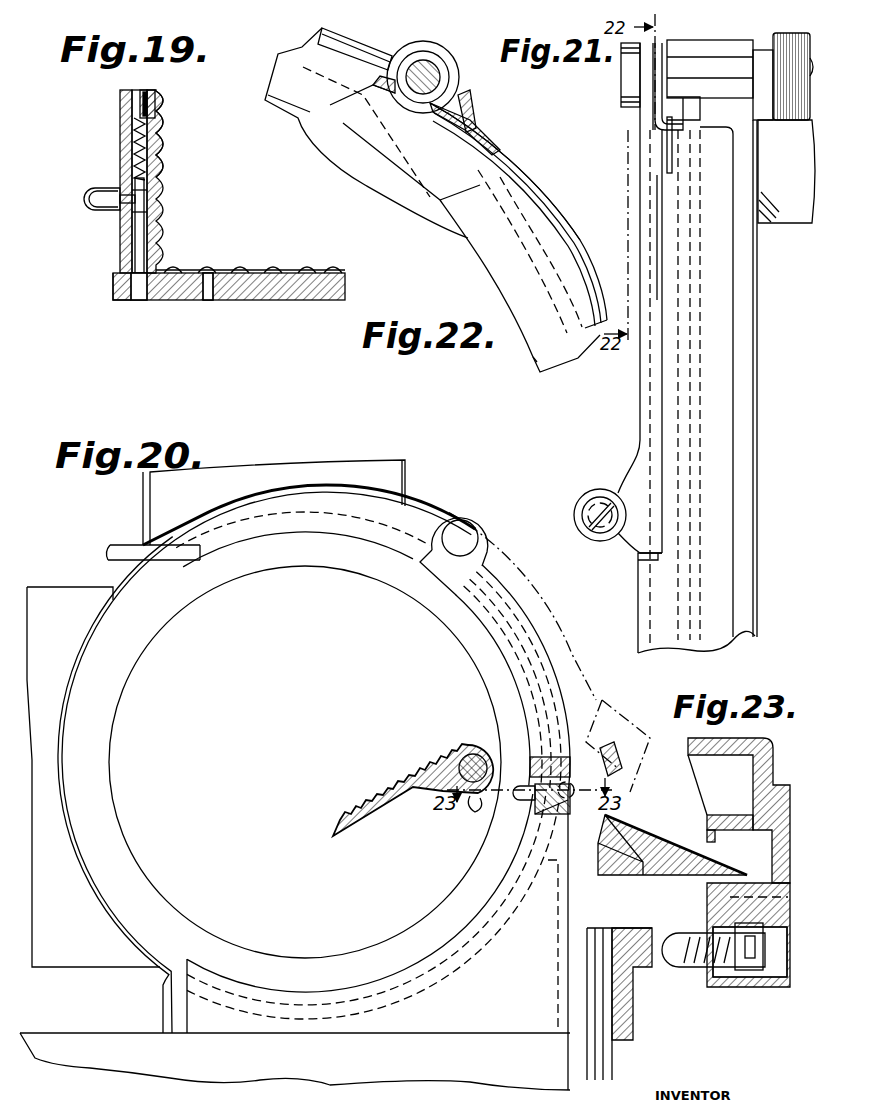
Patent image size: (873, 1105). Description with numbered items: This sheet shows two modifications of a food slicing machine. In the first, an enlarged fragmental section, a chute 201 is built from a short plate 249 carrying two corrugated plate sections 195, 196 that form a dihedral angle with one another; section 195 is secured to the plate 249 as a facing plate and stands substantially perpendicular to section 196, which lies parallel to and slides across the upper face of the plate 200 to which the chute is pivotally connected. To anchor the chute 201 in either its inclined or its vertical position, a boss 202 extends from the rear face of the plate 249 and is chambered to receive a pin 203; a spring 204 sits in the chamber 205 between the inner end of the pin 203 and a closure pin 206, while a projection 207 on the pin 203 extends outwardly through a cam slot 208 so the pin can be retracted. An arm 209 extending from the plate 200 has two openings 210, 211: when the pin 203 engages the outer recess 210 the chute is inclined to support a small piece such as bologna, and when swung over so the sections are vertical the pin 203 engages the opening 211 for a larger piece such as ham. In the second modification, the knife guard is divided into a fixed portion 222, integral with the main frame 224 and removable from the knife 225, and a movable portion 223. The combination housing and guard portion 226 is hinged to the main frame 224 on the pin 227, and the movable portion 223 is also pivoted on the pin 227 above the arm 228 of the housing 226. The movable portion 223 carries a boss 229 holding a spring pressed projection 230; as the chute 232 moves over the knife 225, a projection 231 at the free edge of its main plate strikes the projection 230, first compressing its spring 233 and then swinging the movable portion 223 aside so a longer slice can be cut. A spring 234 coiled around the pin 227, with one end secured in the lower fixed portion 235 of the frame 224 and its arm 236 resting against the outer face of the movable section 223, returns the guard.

In FIG. 19, the corrugated plate section 195 is at (162, 160).
In FIG. 19, the corrugated plate section 196 is at (272, 266).
In FIG. 19, the plate 200 is at (224, 300).
In FIG. 19, the chute 201 is at (190, 230).
In FIG. 19, the boss 202 is at (126, 135).
In FIG. 19, the pin 203 is at (135, 233).
In FIG. 19, the spring 204 is at (158, 126).
In FIG. 19, the chamber 205 is at (160, 141).
In FIG. 19, the closure pin 206 is at (150, 91).
In FIG. 19, the projection 207 is at (92, 190).
In FIG. 19, the cam slot 208 is at (128, 185).
In FIG. 19, the arm 209 is at (112, 282).
In FIG. 19, the opening 210 is at (135, 300).
In FIG. 19, the opening 211 is at (208, 300).
In FIG. 19, the plate 249 is at (152, 212).
In FIG. 21, the fixed portion 222 is at (637, 588).
In FIG. 20, the fixed portion 222 is at (457, 933).
In FIG. 22, the movable portion 223 is at (468, 240).
In FIG. 21, the movable portion 223 is at (640, 112).
In FIG. 20, the movable portion 223 is at (508, 668).
In FIG. 23, the movable portion 223 is at (757, 880).
In FIG. 21, the main frame 224 is at (718, 556).
In FIG. 20, the main frame 224 is at (572, 910).
In FIG. 23, the main frame 224 is at (582, 930).
In FIG. 22, the knife 225 is at (545, 368).
In FIG. 20, the knife 225 is at (135, 590).
In FIG. 23, the knife 225 is at (650, 838).
In FIG. 20, the combination housing and guard portion 226 is at (440, 462).
In FIG. 22, the pin 227 is at (424, 62).
In FIG. 21, the pin 227 is at (619, 85).
In FIG. 20, the pin 227 is at (466, 528).
In FIG. 22, the arm 228 is at (392, 60).
In FIG. 21, the arm 228 is at (661, 48).
In FIG. 20, the arm 228 is at (426, 522).
In FIG. 21, the boss 229 is at (603, 489).
In FIG. 20, the boss 229 is at (535, 806).
In FIG. 23, the boss 229 is at (722, 988).
In FIG. 20, the spring pressed projection 230 is at (525, 800).
In FIG. 23, the spring pressed projection 230 is at (690, 963).
In FIG. 20, the projection 231 is at (490, 748).
In FIG. 23, the projection 231 is at (658, 930).
In FIG. 20, the chute 232 is at (430, 764).
In FIG. 23, the chute 232 is at (630, 1040).
In FIG. 23, the spring 233 is at (748, 975).
In FIG. 22, the spring 234 is at (472, 130).
In FIG. 22, the lower fixed portion 235 is at (470, 100).
In FIG. 21, the lower fixed portion 235 is at (700, 40).
In FIG. 22, the arm 236 is at (555, 212).
In FIG. 21, the arm 236 is at (660, 216).
In FIG. 20, the arm 236 is at (545, 616).